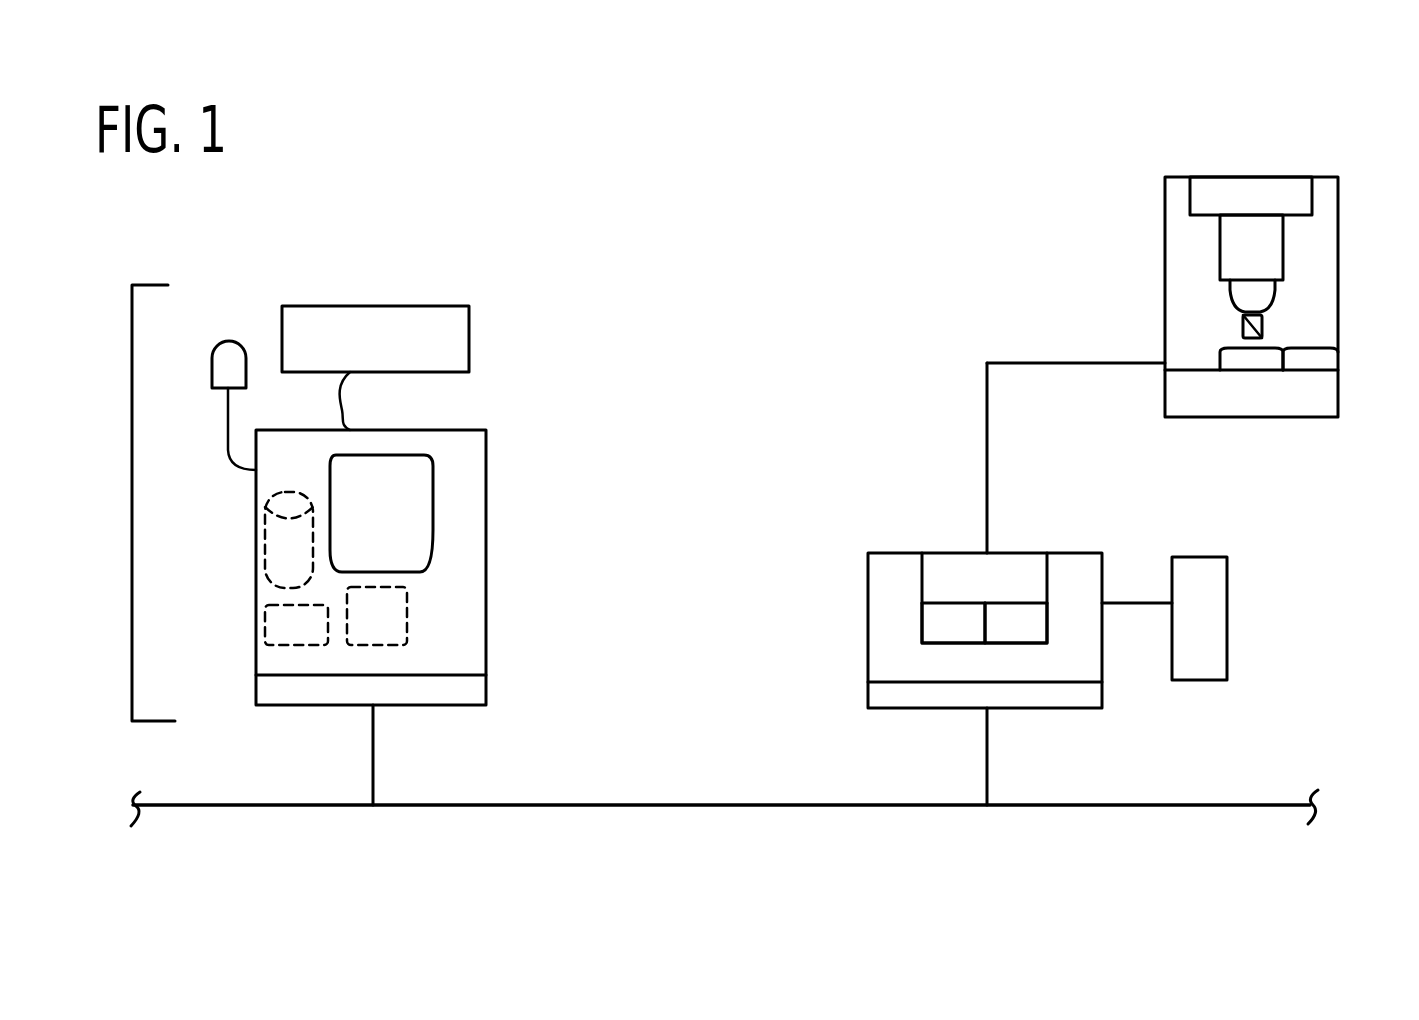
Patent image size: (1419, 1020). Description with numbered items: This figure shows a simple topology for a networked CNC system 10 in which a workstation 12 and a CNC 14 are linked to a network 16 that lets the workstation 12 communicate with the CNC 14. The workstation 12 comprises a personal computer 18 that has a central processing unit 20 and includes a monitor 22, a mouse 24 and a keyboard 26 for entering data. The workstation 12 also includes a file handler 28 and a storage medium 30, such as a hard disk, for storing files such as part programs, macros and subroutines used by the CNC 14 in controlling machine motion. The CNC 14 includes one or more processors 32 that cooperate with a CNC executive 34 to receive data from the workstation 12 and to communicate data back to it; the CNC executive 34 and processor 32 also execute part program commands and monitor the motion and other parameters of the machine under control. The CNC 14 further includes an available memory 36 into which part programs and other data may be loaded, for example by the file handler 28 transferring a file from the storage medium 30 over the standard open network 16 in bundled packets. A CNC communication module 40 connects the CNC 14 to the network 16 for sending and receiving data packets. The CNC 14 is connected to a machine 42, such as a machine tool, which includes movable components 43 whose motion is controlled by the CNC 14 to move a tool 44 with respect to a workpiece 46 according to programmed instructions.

The system 10 is at (676, 178).
The workstation 12 is at (130, 500).
The CNC 14 is at (873, 535).
The network 16 is at (903, 805).
The personal computer 18 is at (522, 371).
The central processing unit 20 is at (408, 618).
The monitor 22 is at (433, 513).
The mouse 24 is at (211, 363).
The keyboard 26 is at (378, 306).
The file handler 28 is at (258, 625).
The storage medium 30 is at (257, 540).
The processor 32 is at (928, 644).
The CNC executive 34 is at (478, 691).
The memory 36 is at (1006, 640).
The CNC communication module 40 is at (1093, 693).
The machine 42 is at (1145, 232).
The movable components 43 is at (1277, 295).
The tool 44 is at (1262, 325).
The workpiece 46 is at (1228, 602).